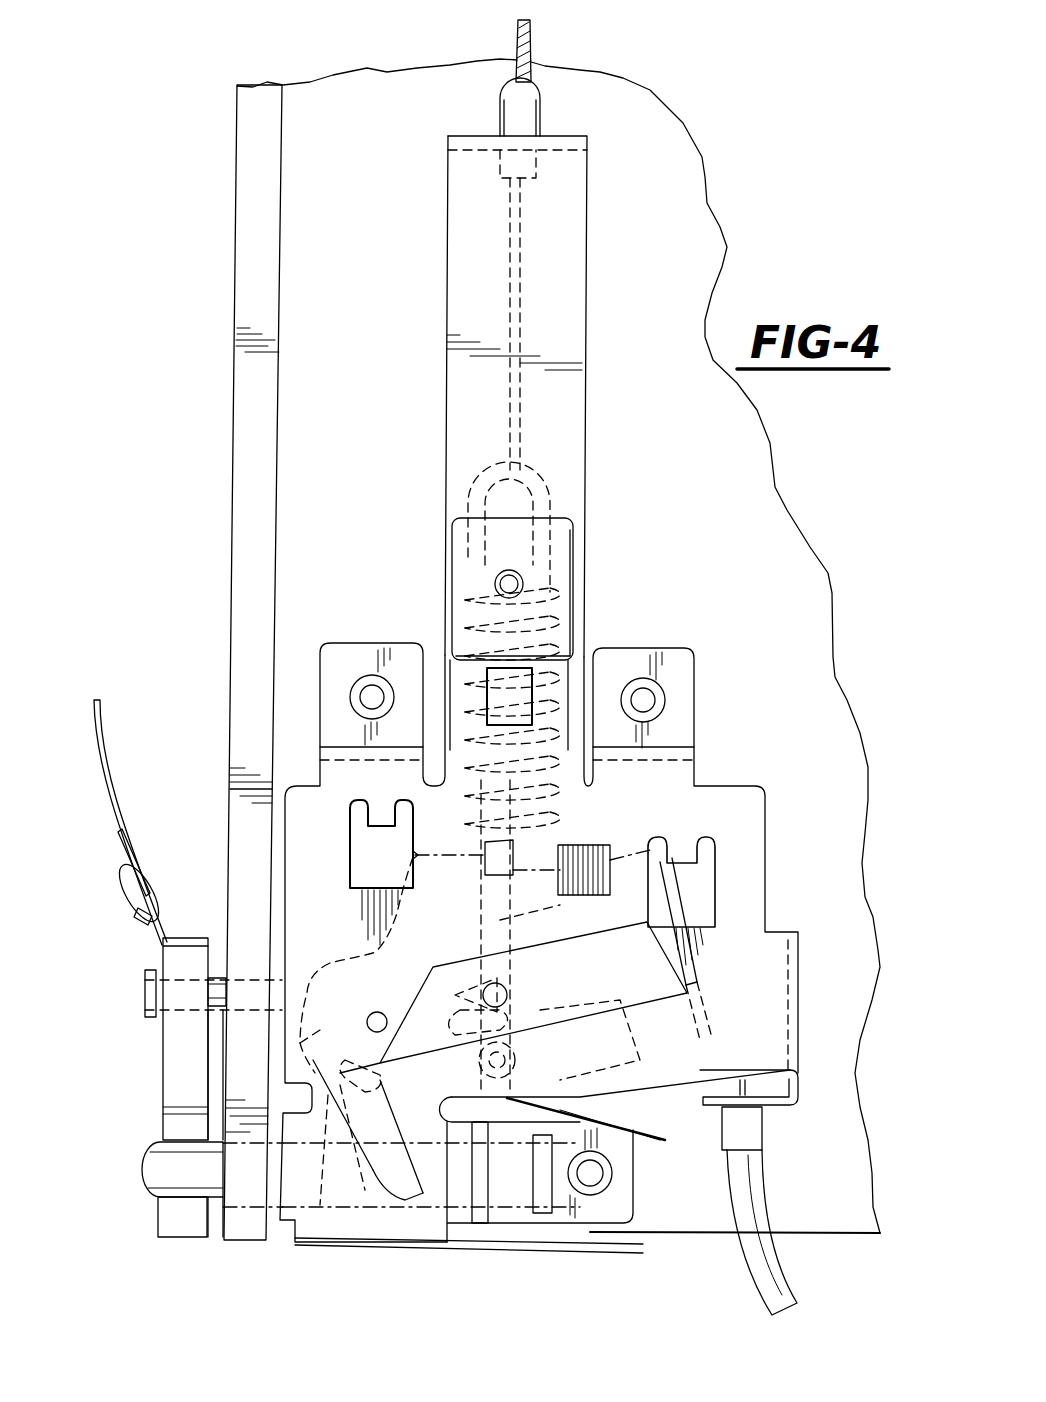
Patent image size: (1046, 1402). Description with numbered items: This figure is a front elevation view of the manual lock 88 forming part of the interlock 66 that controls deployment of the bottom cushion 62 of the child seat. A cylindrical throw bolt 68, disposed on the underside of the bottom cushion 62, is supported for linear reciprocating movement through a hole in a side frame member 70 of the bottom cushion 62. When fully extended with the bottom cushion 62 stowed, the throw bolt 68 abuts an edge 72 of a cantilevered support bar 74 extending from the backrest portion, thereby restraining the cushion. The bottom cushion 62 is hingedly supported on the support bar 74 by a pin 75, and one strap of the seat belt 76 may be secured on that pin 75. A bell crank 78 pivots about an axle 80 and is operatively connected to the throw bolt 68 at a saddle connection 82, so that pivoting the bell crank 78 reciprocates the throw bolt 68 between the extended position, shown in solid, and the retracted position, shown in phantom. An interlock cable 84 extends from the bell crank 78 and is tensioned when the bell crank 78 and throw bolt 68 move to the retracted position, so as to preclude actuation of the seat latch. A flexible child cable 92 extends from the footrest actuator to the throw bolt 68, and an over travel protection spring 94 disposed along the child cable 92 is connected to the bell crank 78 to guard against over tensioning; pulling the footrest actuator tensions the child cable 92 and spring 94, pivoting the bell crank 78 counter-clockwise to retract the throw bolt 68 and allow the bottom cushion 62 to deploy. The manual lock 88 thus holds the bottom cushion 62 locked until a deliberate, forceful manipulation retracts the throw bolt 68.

The bottom cushion 62 is at (753, 492).
The interlock 66 is at (774, 786).
The throw bolt 68 is at (175, 1190).
The side frame member 70 is at (240, 402).
The edge 72 is at (165, 1125).
The support bar 74 is at (163, 1050).
The pin 75 is at (225, 987).
The seat belt 76 is at (114, 777).
The bell crank 78 is at (643, 1007).
The axle 80 is at (384, 1016).
The saddle connection 82 is at (338, 1210).
The interlock cable 84 is at (703, 893).
The manual lock 88 is at (551, 108).
The child cable 92 is at (528, 47).
The over travel protection spring 94 is at (462, 500).